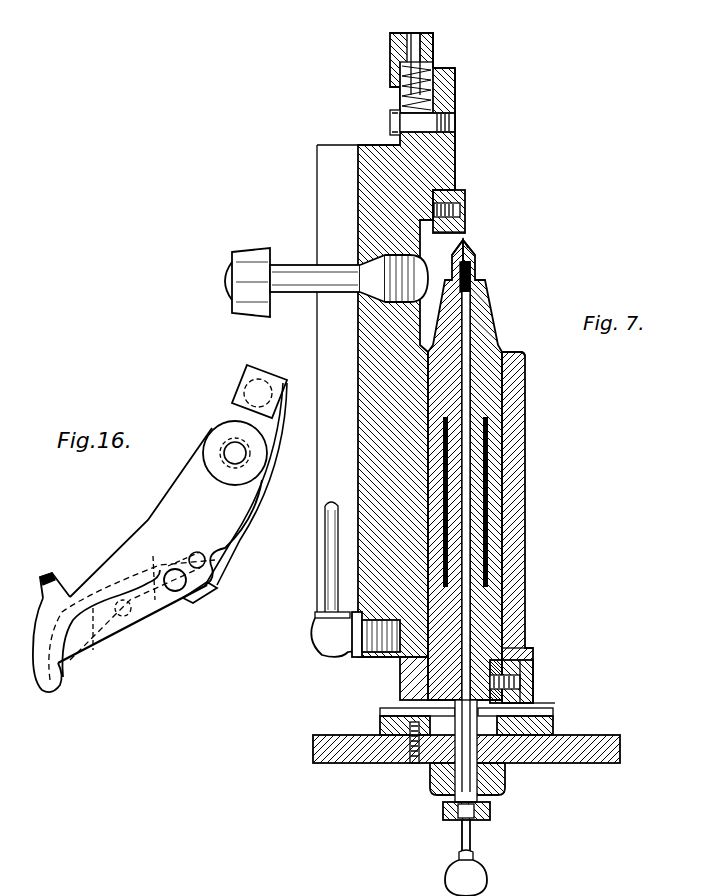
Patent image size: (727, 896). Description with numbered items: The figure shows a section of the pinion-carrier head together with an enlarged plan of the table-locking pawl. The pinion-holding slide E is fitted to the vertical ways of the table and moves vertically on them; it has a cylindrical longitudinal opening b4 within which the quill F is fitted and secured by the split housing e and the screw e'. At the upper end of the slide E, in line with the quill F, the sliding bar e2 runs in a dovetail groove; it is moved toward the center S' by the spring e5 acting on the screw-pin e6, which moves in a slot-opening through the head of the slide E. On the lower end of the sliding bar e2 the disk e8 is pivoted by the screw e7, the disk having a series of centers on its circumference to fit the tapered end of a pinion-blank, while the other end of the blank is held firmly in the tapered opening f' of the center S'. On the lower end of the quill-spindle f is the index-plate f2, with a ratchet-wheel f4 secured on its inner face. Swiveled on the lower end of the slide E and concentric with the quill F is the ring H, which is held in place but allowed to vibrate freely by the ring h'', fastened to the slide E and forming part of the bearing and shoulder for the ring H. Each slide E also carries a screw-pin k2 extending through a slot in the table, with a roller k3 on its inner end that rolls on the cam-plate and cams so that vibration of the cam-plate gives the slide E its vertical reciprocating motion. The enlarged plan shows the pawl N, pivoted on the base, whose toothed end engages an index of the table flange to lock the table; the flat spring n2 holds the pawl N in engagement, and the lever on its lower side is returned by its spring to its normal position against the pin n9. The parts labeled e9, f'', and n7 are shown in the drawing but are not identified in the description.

In FIG. 7, the pinion-holding slide E is at (409, 345).
In FIG. 7, the spring e5 is at (456, 87).
In FIG. 7, the screw-pin e6 is at (456, 125).
In FIG. 7, the sliding bar e2 is at (457, 185).
In FIG. 7, the clamp block e9 is at (462, 196).
In FIG. 7, the screw e7 is at (462, 210).
In FIG. 7, the disk e8 is at (462, 225).
In FIG. 7, the roller k3 is at (247, 274).
In FIG. 7, the screw-pin k2 is at (349, 275).
In FIG. 7, the quill F is at (485, 407).
In FIG. 7, the tapered opening f' is at (475, 253).
In FIG. 7, the center S' is at (499, 244).
In FIG. 7, the split housing e is at (532, 527).
In FIG. 7, the cylindrical longitudinal opening b4 is at (526, 366).
In FIG. 7, the quill-spindle f is at (540, 650).
In FIG. 7, the ring H is at (534, 675).
In FIG. 7, the nut part f'' is at (556, 681).
In FIG. 7, the screw e' is at (587, 705).
In FIG. 7, the ring h'' is at (448, 614).
In FIG. 7, the ratchet-wheel f4 is at (380, 722).
In FIG. 7, the index-plate f2 is at (621, 750).
In FIG. 7, the pawl N is at (490, 882).
In FIG. 16, the pawl N is at (162, 600).
In FIG. 16, the flat spring n2 is at (248, 527).
In FIG. 16, the pin n9 is at (50, 695).
In FIG. 16, the pivot n7 is at (93, 650).